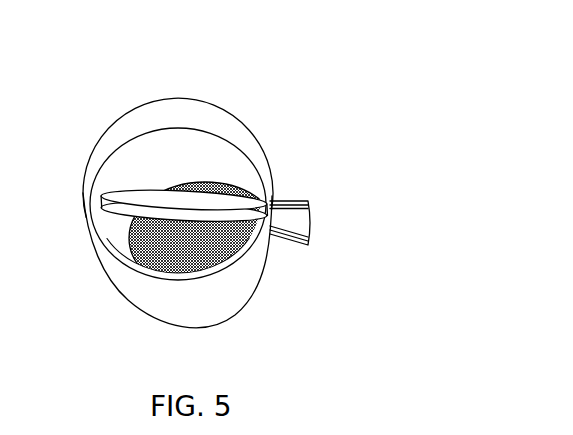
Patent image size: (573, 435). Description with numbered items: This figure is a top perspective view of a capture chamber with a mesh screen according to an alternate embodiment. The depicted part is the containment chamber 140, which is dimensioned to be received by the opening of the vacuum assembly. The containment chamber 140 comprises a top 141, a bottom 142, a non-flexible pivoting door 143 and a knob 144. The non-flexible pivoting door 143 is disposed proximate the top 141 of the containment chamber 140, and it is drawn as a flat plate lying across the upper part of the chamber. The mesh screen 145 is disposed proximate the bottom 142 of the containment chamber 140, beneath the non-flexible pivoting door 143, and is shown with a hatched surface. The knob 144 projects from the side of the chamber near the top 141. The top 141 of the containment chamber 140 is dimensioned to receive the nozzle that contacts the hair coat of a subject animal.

The containment chamber 140 is at (285, 218).
The top 141 is at (195, 98).
The bottom 142 is at (228, 305).
The non-flexible pivoting door 143 is at (225, 207).
The knob 144 is at (298, 218).
The mesh screen 145 is at (230, 261).